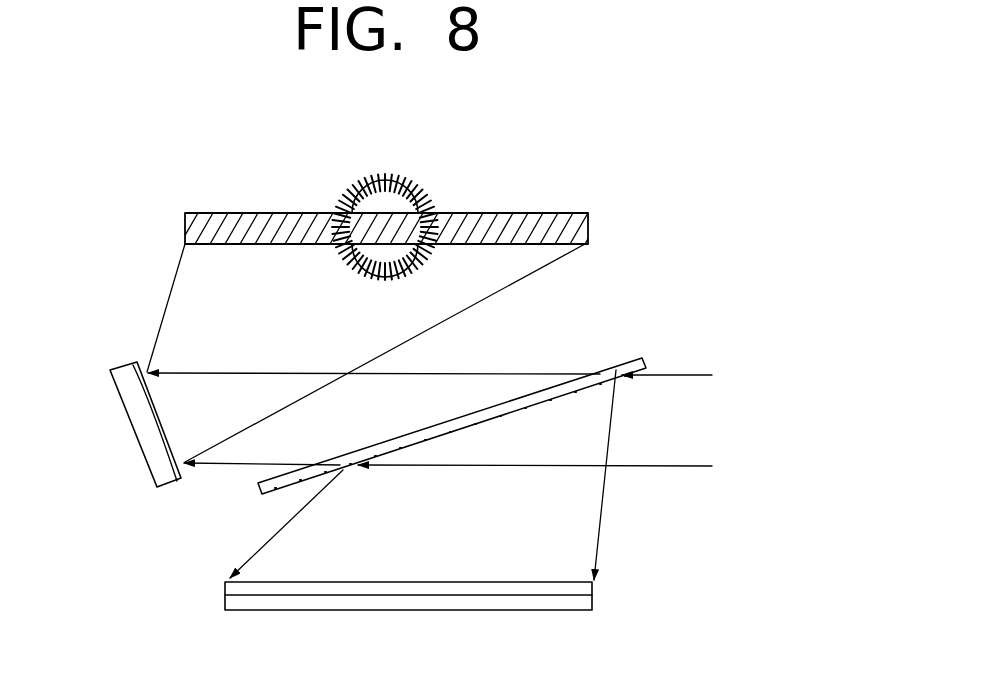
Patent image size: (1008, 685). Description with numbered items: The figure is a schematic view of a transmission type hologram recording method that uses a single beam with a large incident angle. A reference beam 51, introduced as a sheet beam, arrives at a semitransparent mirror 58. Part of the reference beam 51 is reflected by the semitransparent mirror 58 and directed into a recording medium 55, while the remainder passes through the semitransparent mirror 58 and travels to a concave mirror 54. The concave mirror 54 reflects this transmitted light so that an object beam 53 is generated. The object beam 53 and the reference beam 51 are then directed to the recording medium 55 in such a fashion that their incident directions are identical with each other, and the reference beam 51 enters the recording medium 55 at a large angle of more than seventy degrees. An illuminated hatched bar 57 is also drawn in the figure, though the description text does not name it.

The reference beam 51 is at (703, 466).
The object beam 53 is at (168, 293).
The concave mirror 54 is at (162, 490).
The recording medium 55 is at (592, 600).
The light source 57 is at (588, 230).
The semitransparent mirror 58 is at (616, 370).